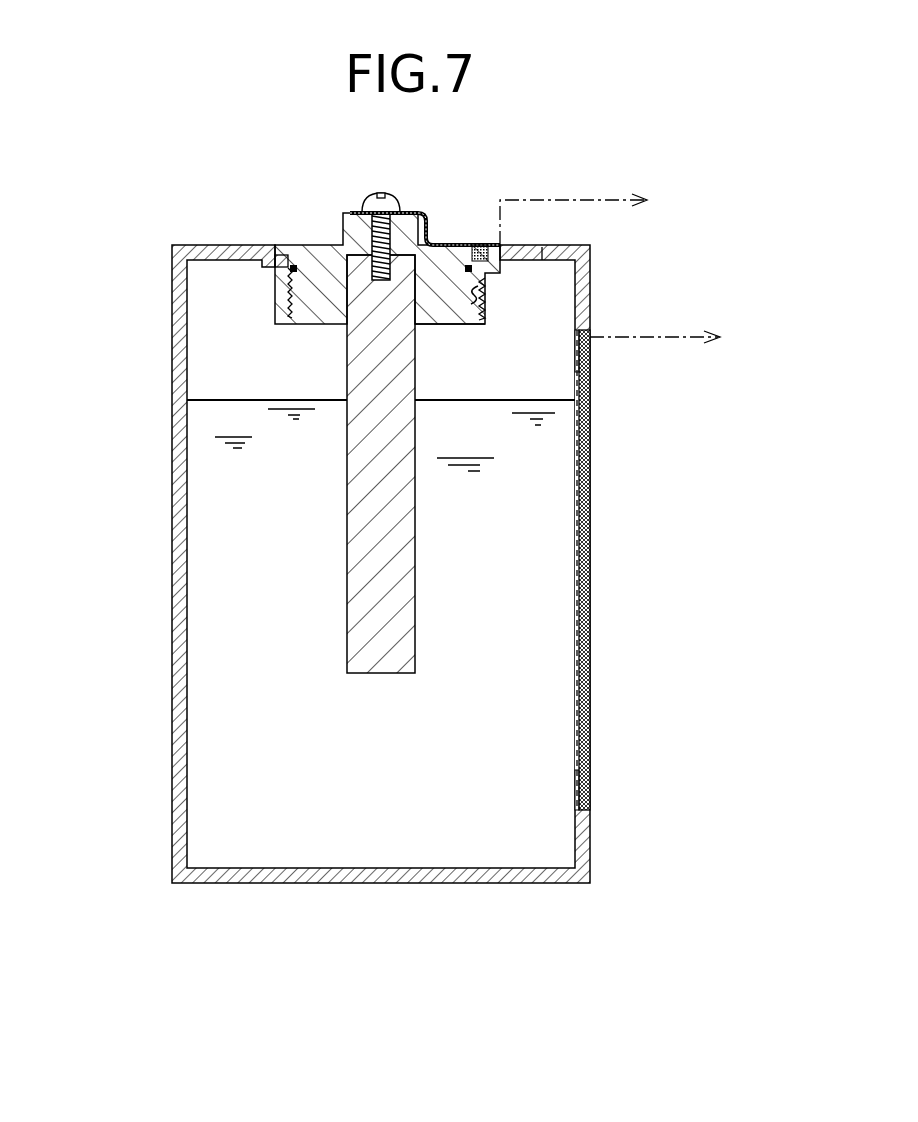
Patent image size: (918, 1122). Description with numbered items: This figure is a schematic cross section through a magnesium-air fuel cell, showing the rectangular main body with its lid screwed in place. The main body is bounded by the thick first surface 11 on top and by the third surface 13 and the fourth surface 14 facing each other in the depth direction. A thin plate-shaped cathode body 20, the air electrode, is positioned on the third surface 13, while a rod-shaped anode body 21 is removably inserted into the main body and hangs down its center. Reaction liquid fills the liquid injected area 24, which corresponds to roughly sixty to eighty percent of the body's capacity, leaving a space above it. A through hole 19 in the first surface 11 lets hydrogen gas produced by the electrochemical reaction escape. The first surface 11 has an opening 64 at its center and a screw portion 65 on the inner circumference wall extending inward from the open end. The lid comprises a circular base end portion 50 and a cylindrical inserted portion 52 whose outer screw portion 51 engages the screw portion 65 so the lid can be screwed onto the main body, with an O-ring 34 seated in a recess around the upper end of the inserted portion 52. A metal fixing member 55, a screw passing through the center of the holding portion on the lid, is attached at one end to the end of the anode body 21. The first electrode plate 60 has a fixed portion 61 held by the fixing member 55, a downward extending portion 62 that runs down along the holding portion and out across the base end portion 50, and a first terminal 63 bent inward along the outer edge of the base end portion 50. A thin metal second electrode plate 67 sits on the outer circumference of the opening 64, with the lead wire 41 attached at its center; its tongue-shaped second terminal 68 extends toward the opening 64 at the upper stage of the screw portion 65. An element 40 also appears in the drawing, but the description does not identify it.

The first surface 11 is at (215, 245).
The third surface 13 is at (592, 833).
The fourth surface 14 is at (172, 450).
The through hole 19 is at (542, 258).
The cathode body 20 is at (593, 505).
The anode body 21 is at (388, 568).
The liquid injected area 24 is at (220, 757).
The O-ring 34 is at (290, 270).
The current direction 40 is at (690, 337).
The lead wire 41 is at (605, 200).
The base end portion 50 is at (318, 245).
The screw portion 51 is at (480, 296).
The inserted portion 52 is at (448, 325).
The fixing member 55 is at (378, 195).
The first electrode plate 60 is at (428, 228).
The fixed portion 61 is at (407, 212).
The downward extending portion 62 is at (428, 236).
The first terminal 63 is at (498, 243).
The opening 64 is at (285, 255).
The screw portion 65 is at (480, 314).
The second electrode plate 67 is at (500, 250).
The second terminal 68 is at (476, 245).